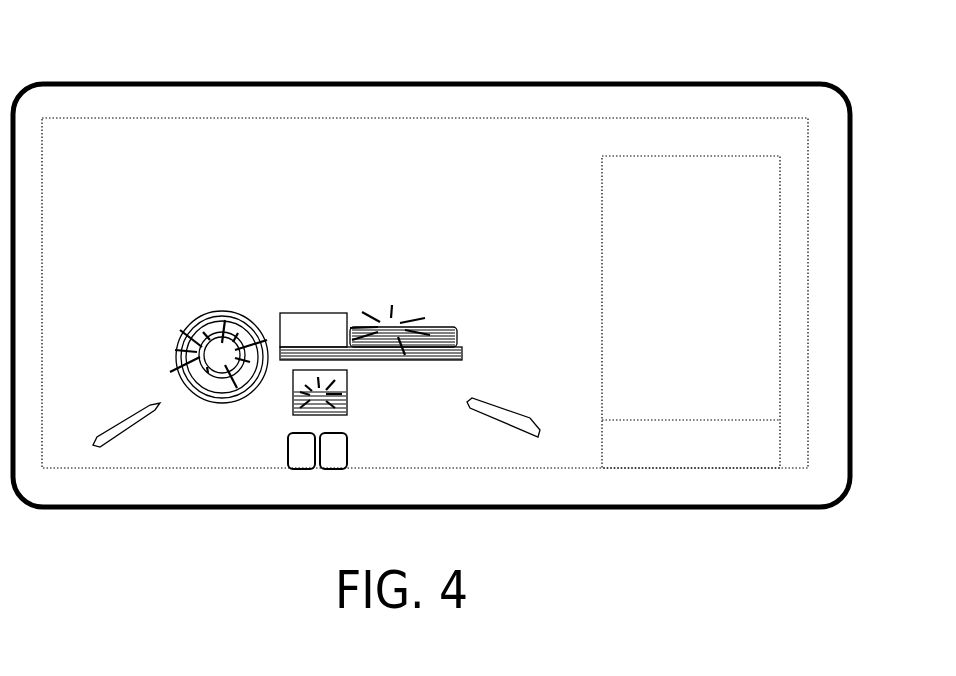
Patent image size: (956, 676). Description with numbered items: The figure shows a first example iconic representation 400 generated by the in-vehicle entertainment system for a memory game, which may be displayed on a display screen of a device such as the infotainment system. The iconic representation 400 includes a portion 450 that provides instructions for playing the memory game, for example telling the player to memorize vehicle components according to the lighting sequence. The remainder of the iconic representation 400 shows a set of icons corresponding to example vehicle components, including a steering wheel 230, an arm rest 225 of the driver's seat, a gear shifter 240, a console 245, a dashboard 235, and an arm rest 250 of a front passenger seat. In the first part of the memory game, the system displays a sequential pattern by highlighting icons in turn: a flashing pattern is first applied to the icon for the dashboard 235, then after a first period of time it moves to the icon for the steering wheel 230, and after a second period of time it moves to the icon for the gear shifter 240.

The iconic representation 400 is at (617, 108).
The portion 450 is at (588, 205).
The arm rest of the driver's seat 225 is at (93, 427).
The steering wheel 230 is at (197, 315).
The dashboard 235 is at (437, 312).
The gear shifter 240 is at (340, 392).
The console 245 is at (348, 448).
The arm rest of a front passenger seat 250 is at (503, 397).